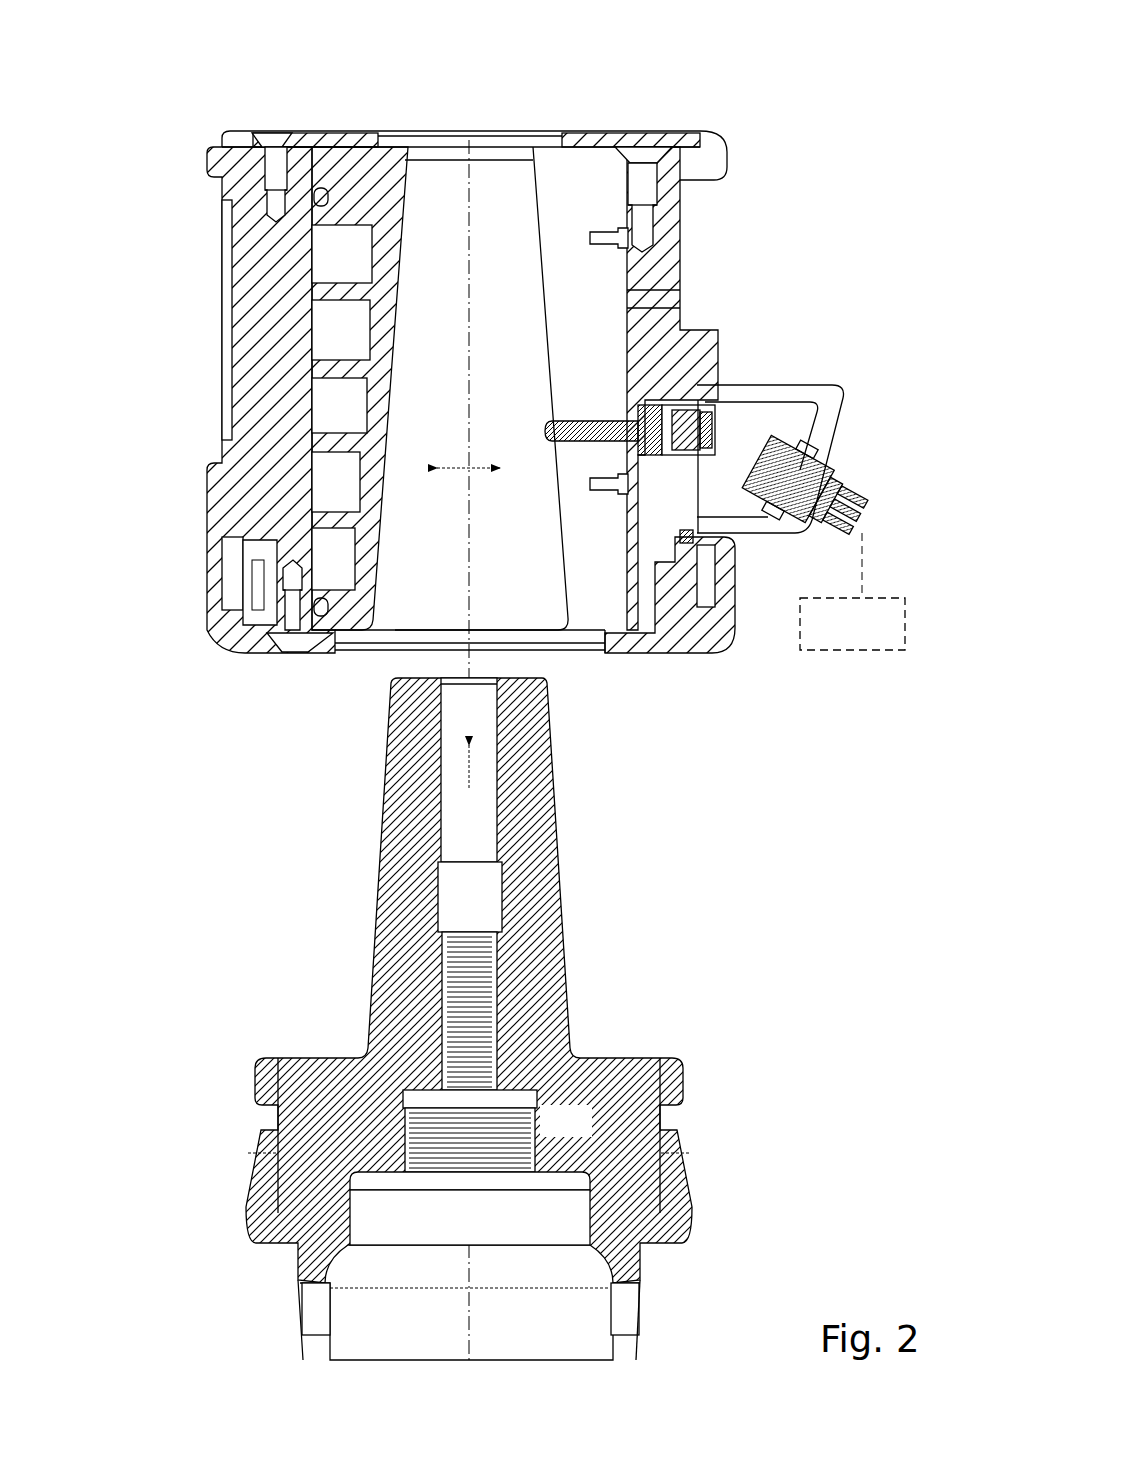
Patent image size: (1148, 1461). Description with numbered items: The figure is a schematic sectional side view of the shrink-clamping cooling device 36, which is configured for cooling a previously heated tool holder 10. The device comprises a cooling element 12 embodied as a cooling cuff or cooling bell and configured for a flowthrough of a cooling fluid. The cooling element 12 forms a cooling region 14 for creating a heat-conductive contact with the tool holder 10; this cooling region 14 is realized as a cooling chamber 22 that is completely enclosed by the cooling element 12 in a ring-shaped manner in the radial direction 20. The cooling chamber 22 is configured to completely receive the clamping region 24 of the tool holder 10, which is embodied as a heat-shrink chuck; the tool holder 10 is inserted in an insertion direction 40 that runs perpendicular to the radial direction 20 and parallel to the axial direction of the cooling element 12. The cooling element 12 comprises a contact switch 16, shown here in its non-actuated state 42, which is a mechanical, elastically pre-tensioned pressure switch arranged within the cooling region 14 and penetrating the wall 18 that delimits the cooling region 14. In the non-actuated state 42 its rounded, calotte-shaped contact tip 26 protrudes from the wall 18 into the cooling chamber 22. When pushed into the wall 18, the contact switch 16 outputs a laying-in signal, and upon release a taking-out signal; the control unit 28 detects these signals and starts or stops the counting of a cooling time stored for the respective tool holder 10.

The tool holder 10 is at (383, 928).
The cooling element 12 is at (215, 252).
The cooling region 14 is at (421, 252).
The contact switch 16 is at (570, 418).
The wall 18 is at (540, 264).
The radial direction 20 is at (463, 473).
The cooling chamber 22 is at (448, 297).
The clamping region 24 is at (383, 780).
The contact tip 26 is at (545, 428).
The control unit 28 is at (862, 635).
The shrink-clamping cooling device 36 is at (698, 105).
The insertion direction 40 is at (473, 782).
The non-actuated state 42 is at (606, 400).